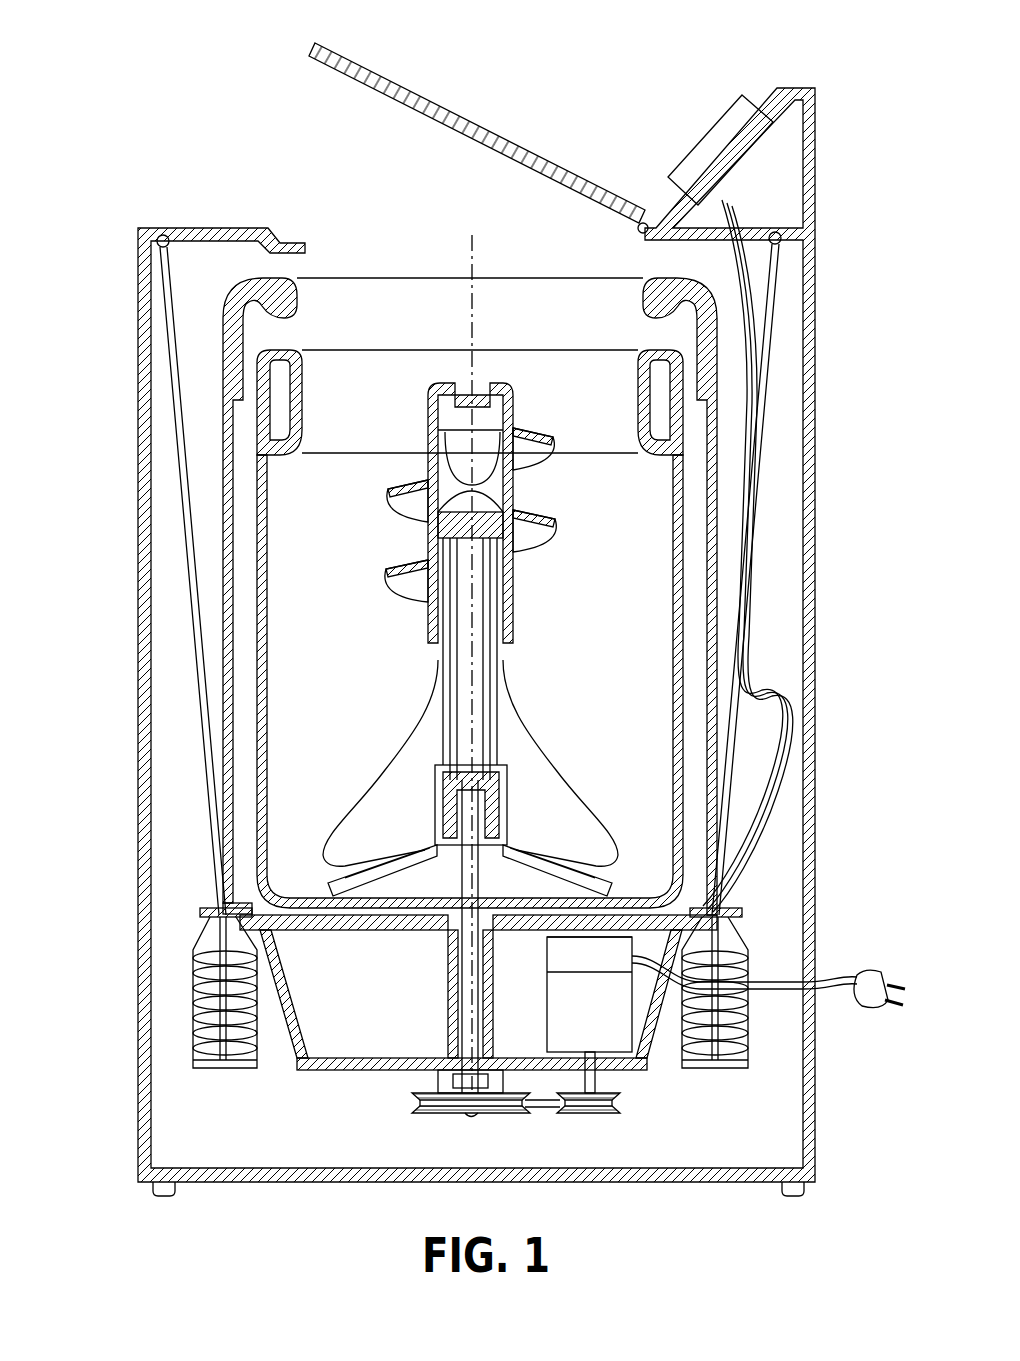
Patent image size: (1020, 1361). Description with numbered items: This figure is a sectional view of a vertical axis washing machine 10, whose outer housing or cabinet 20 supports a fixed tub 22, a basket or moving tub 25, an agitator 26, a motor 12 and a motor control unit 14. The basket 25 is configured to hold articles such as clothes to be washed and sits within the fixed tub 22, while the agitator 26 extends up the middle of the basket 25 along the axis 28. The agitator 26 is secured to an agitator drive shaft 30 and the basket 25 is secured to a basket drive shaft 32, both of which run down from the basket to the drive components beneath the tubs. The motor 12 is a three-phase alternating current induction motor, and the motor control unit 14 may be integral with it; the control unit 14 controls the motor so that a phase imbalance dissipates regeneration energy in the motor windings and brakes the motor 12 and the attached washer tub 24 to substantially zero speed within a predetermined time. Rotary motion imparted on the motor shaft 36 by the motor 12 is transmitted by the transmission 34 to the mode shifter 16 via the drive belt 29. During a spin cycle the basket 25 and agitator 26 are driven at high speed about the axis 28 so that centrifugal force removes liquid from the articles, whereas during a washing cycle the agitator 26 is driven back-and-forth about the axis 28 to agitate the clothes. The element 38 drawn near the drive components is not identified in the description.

The washing machine 10 is at (228, 137).
The motor 12 is at (614, 1052).
The motor control unit 14 is at (547, 950).
The mode shifter 16 is at (530, 1103).
The cabinet 20 is at (138, 303).
The fixed tub 22 is at (225, 422).
The washer tub 24 is at (673, 517).
The basket 25 is at (416, 344).
The agitator 26 is at (515, 676).
The axis 28 is at (480, 262).
The drive belt 29 is at (505, 1112).
The agitator drive shaft 30 is at (470, 1010).
The basket drive shaft 32 is at (448, 970).
The transmission 34 is at (529, 1083).
The motor shaft 36 is at (597, 1085).
The clutch 38 is at (440, 1079).